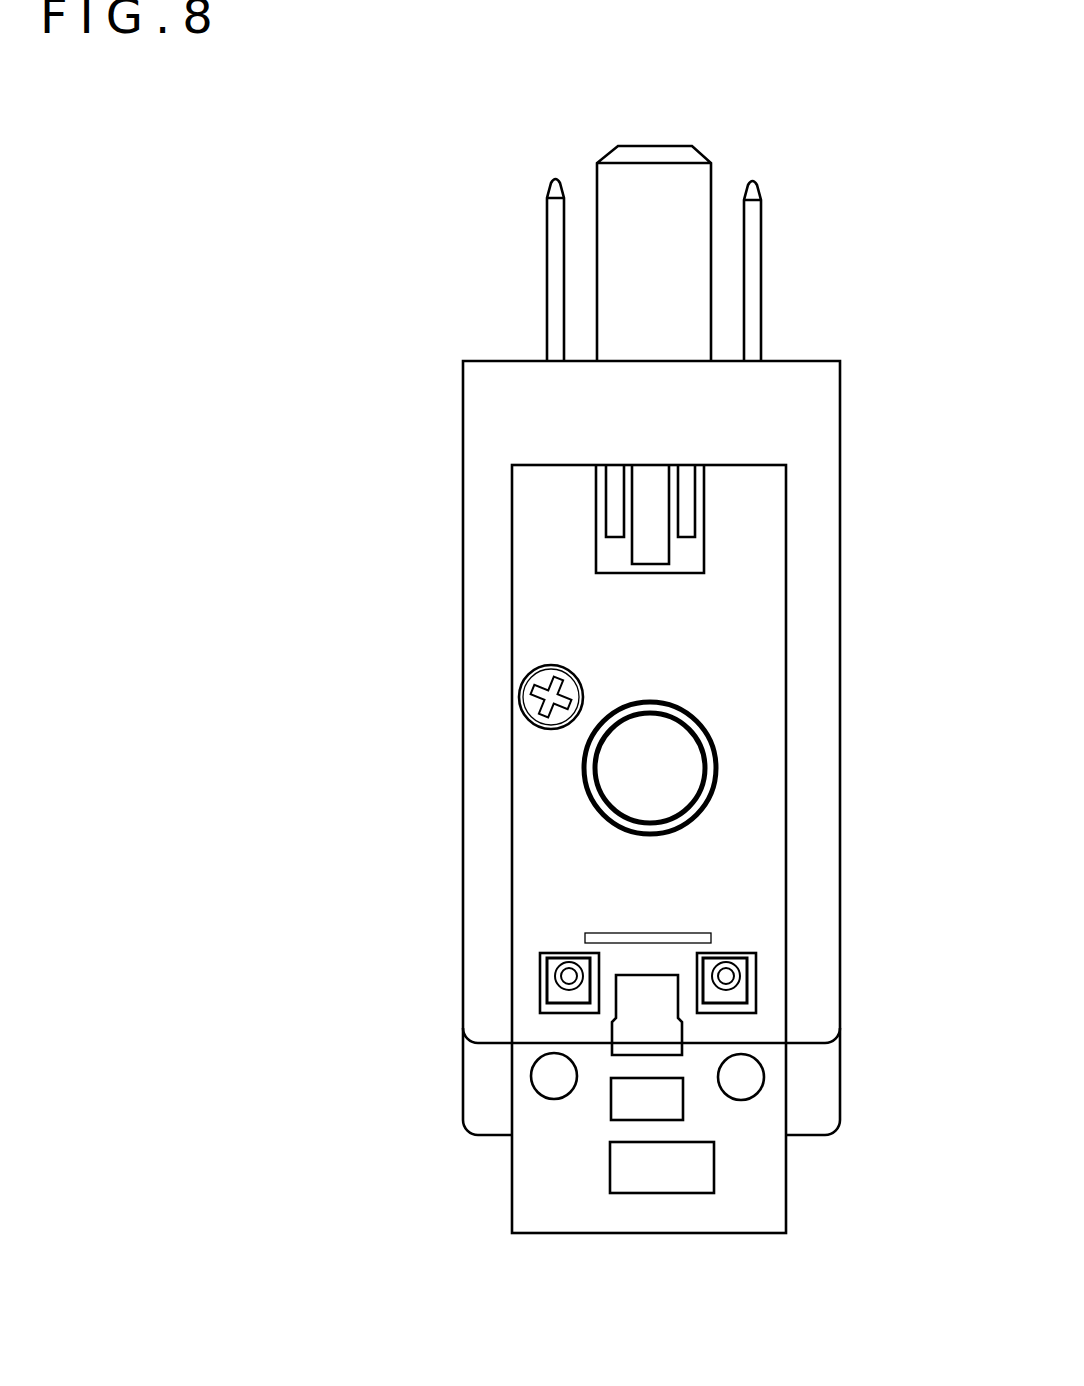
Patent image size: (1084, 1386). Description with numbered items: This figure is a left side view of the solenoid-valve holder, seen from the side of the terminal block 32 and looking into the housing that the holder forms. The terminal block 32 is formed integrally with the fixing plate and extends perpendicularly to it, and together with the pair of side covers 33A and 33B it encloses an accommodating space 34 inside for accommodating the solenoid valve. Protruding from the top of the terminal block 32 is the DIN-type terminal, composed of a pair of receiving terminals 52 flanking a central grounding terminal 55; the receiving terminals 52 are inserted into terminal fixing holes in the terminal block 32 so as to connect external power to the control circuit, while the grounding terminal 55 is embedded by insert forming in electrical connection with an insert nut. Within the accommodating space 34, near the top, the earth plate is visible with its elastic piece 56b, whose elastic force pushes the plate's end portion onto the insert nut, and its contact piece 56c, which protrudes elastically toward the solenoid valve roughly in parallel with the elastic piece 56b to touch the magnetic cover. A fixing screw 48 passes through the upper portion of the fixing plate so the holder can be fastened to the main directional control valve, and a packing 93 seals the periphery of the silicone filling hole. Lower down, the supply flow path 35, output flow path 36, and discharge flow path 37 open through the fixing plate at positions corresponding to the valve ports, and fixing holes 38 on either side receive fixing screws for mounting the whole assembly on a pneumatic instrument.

The terminal block 32 is at (696, 740).
The side cover 33A is at (594, 899).
The side cover 33B is at (706, 985).
The accommodating space 34 is at (649, 849).
The supply flow path 35 is at (662, 1229).
The output flow path 36 is at (765, 1084).
The discharge flow path 37 is at (769, 1015).
The fixing hole 38 is at (639, 1114).
The fixing screw 48 is at (478, 687).
The receiving terminal 52 is at (651, 270).
The grounding terminal 55 is at (681, 213).
The elastic piece 56b is at (776, 543).
The contact piece 56c is at (758, 519).
The packing 93 is at (745, 768).